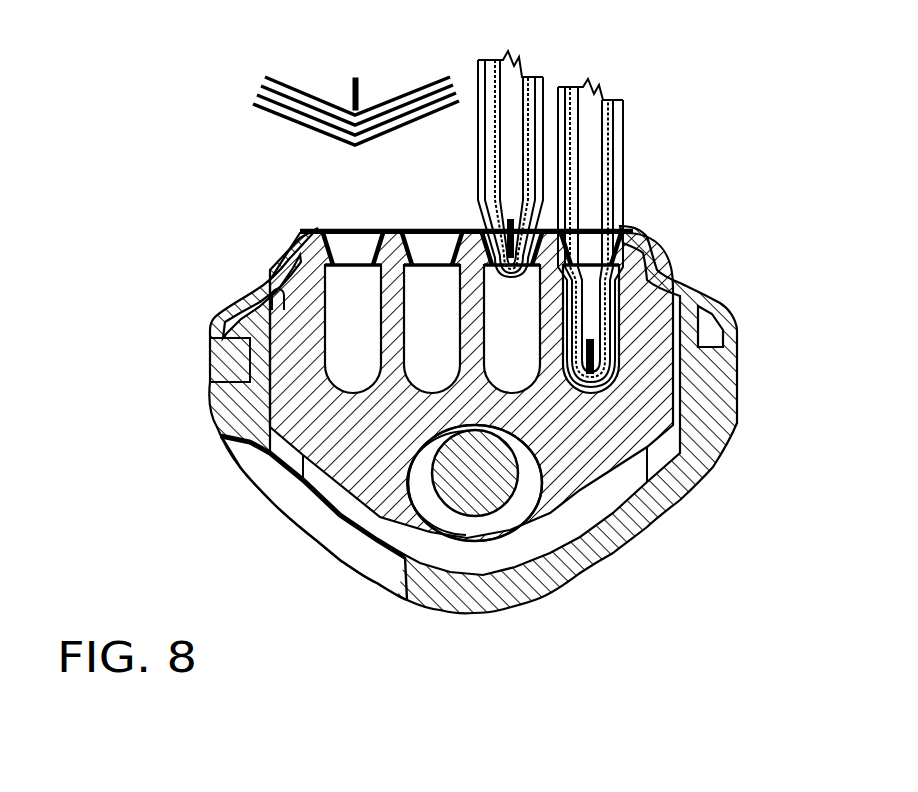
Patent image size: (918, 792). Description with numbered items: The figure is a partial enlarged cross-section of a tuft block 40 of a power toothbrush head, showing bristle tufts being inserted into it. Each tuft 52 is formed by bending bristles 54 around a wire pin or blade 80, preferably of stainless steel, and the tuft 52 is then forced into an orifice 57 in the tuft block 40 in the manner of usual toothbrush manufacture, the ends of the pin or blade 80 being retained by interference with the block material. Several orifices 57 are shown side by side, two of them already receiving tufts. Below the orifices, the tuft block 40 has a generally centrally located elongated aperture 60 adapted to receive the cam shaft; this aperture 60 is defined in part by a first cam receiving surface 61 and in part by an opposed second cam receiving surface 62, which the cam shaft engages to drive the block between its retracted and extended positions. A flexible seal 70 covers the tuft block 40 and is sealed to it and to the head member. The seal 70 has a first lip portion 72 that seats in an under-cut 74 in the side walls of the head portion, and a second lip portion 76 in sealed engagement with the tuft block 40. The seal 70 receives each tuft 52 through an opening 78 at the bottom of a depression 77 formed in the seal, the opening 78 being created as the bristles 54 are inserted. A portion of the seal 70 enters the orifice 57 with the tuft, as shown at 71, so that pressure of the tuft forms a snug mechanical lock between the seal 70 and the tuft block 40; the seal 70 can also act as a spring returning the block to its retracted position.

The tuft block 40 is at (617, 480).
The tuft 52 is at (595, 132).
The bristles 54 is at (328, 107).
The orifice 57 is at (437, 323).
The aperture 60 is at (527, 468).
The first cam receiving surface 61 is at (447, 433).
The second cam receiving surface 62 is at (453, 427).
The flexible seal 70 is at (232, 300).
The seal portion entering orifice 71 is at (537, 272).
The first lip portion 72 is at (210, 363).
The under-cut 74 is at (210, 333).
The second lip portion 76 is at (287, 270).
The depression 77 is at (372, 262).
The opening 78 is at (333, 230).
The wire pin or blade 80 is at (360, 80).